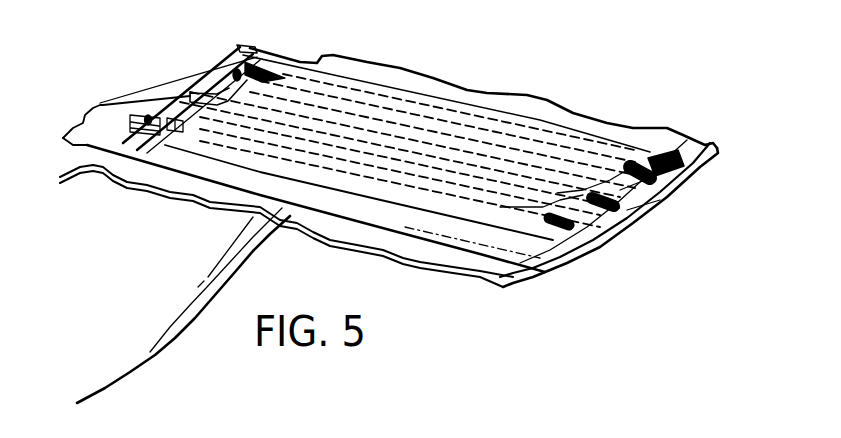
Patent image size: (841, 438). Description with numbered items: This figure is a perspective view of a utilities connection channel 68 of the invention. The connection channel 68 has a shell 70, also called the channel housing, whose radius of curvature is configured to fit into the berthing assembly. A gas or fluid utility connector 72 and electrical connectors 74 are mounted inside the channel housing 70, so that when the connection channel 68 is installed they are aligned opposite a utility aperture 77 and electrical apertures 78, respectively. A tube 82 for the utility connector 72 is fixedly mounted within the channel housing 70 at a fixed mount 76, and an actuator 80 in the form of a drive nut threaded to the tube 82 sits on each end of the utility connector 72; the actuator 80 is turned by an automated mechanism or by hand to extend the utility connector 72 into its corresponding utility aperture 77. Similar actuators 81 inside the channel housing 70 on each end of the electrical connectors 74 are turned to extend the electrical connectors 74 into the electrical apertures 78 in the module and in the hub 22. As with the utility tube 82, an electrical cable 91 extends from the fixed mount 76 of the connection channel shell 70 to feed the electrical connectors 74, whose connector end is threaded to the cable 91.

The hub 22 is at (96, 51).
The utilities connection channel 68 is at (431, 106).
The shell 70 is at (360, 185).
The utility connector 72 is at (200, 100).
The electrical connectors 74 is at (257, 53).
The fixed mount 76 is at (172, 98).
The utility aperture 77 is at (190, 90).
The electrical apertures 78 is at (232, 72).
The actuator 80 is at (227, 63).
The actuators 81 is at (270, 63).
The tube 82 is at (337, 130).
The electrical cable 91 is at (393, 107).